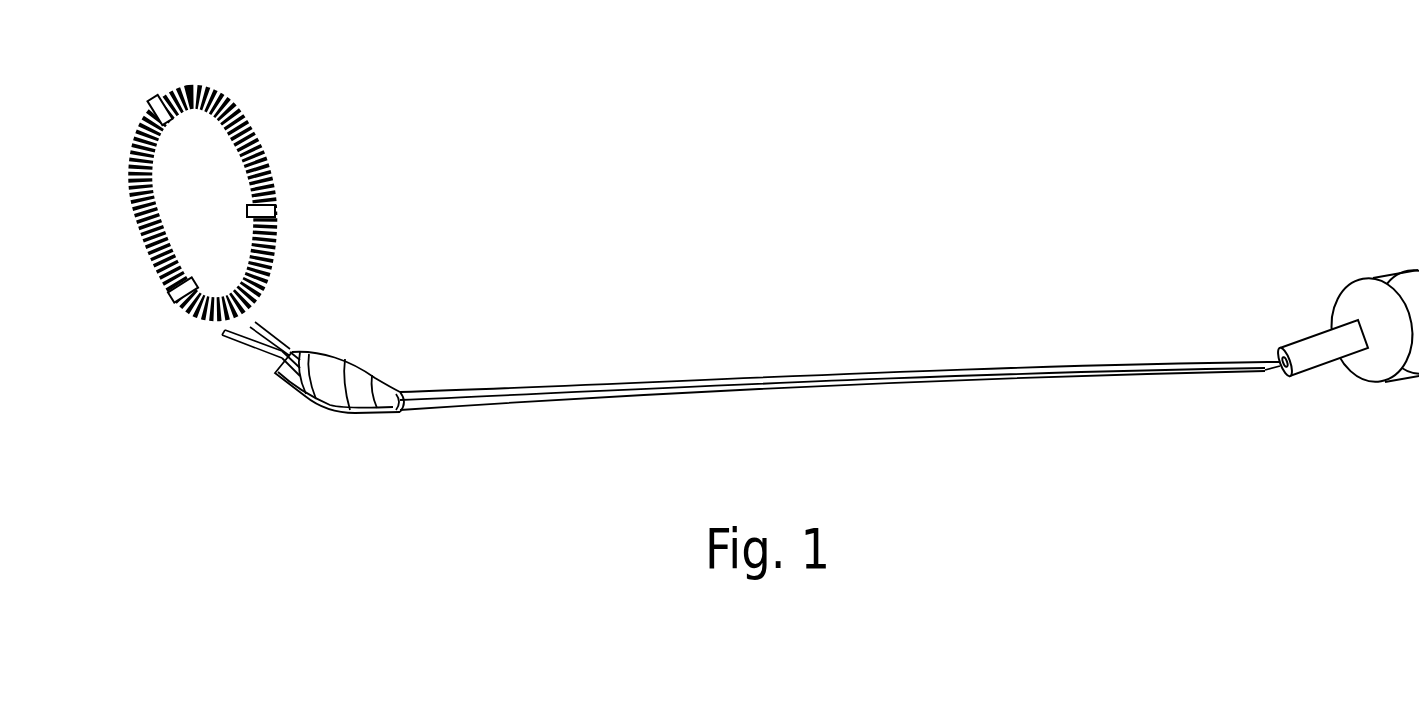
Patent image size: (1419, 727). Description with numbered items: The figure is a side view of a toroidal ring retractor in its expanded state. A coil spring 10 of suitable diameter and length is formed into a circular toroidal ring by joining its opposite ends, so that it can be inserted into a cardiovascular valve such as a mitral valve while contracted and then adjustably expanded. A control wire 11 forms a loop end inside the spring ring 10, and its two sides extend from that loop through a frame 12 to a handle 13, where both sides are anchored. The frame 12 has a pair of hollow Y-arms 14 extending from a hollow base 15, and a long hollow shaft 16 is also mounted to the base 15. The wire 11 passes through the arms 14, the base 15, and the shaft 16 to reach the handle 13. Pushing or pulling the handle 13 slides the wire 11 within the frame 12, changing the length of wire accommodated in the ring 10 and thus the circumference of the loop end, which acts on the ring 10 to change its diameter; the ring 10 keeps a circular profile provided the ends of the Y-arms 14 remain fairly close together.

The coil spring 10 is at (237, 120).
The control wire 11 is at (142, 232).
The frame 12 is at (518, 371).
The handle 13 is at (1373, 290).
The Y-arms 14 is at (255, 345).
The base 15 is at (333, 372).
The shaft 16 is at (838, 380).